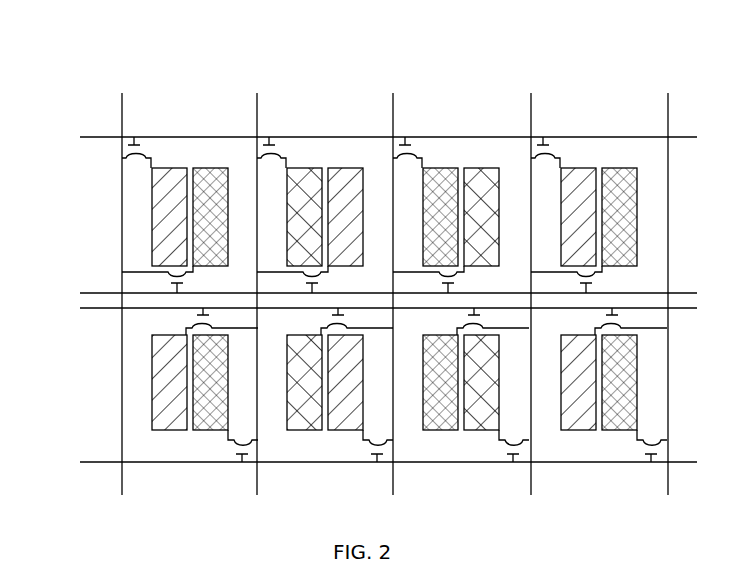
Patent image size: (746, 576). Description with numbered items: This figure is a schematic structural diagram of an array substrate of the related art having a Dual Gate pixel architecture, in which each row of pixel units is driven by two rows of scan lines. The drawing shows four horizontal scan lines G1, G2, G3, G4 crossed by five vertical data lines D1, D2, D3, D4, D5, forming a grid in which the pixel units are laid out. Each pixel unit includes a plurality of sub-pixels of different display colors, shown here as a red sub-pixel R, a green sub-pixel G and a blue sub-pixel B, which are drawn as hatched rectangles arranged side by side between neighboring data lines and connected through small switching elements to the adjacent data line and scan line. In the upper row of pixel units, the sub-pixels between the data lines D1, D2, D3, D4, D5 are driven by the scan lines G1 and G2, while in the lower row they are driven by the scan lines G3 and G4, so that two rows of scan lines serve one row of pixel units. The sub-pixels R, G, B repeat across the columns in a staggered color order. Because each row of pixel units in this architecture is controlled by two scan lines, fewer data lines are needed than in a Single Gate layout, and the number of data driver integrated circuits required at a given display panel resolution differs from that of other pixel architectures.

The red sub-pixel R is at (168, 195).
The green sub-pixel G is at (209, 195).
The blue sub-pixel B is at (305, 190).
The data line D1 is at (121, 278).
The data line D2 is at (257, 278).
The data line D3 is at (393, 278).
The data line D4 is at (531, 278).
The data line D5 is at (668, 278).
The scan line G1 is at (365, 138).
The scan line G2 is at (365, 285).
The scan line G3 is at (365, 314).
The scan line G4 is at (365, 463).